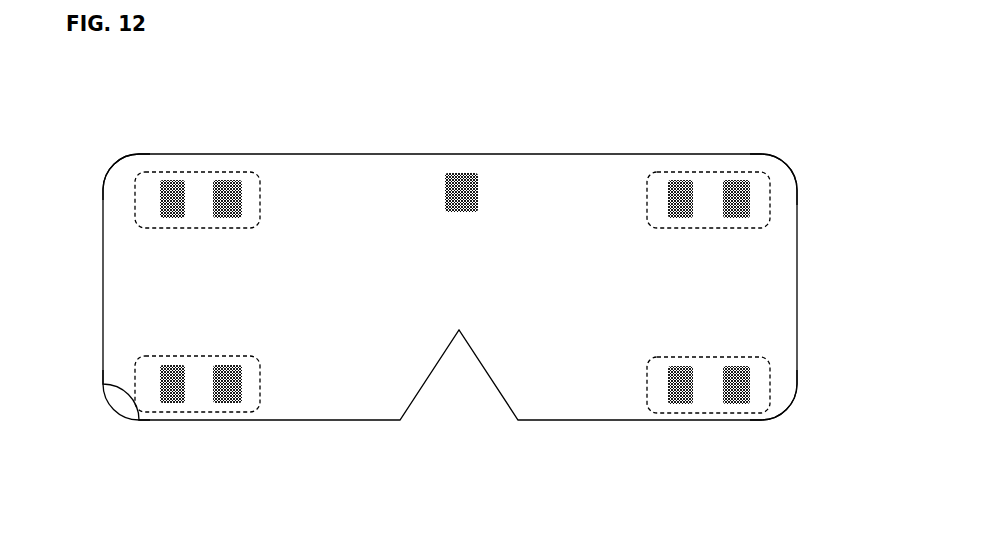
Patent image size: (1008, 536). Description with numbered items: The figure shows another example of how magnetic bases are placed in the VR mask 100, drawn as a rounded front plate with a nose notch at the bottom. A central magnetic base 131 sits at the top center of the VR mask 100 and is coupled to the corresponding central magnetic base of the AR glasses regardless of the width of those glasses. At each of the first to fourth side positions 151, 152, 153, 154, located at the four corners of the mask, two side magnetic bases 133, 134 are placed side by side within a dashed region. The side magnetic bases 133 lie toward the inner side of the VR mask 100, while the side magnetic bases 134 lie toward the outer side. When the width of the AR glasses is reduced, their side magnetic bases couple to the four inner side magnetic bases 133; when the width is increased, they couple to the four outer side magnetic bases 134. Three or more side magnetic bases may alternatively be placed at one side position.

The VR mask 100 is at (577, 154).
The central magnetic base 131 is at (468, 173).
The side magnetic base 133 is at (237, 180).
The side magnetic base 134 is at (178, 180).
The first side position 151 is at (132, 158).
The second side position 152 is at (772, 204).
The third side position 153 is at (140, 413).
The fourth side position 154 is at (772, 364).